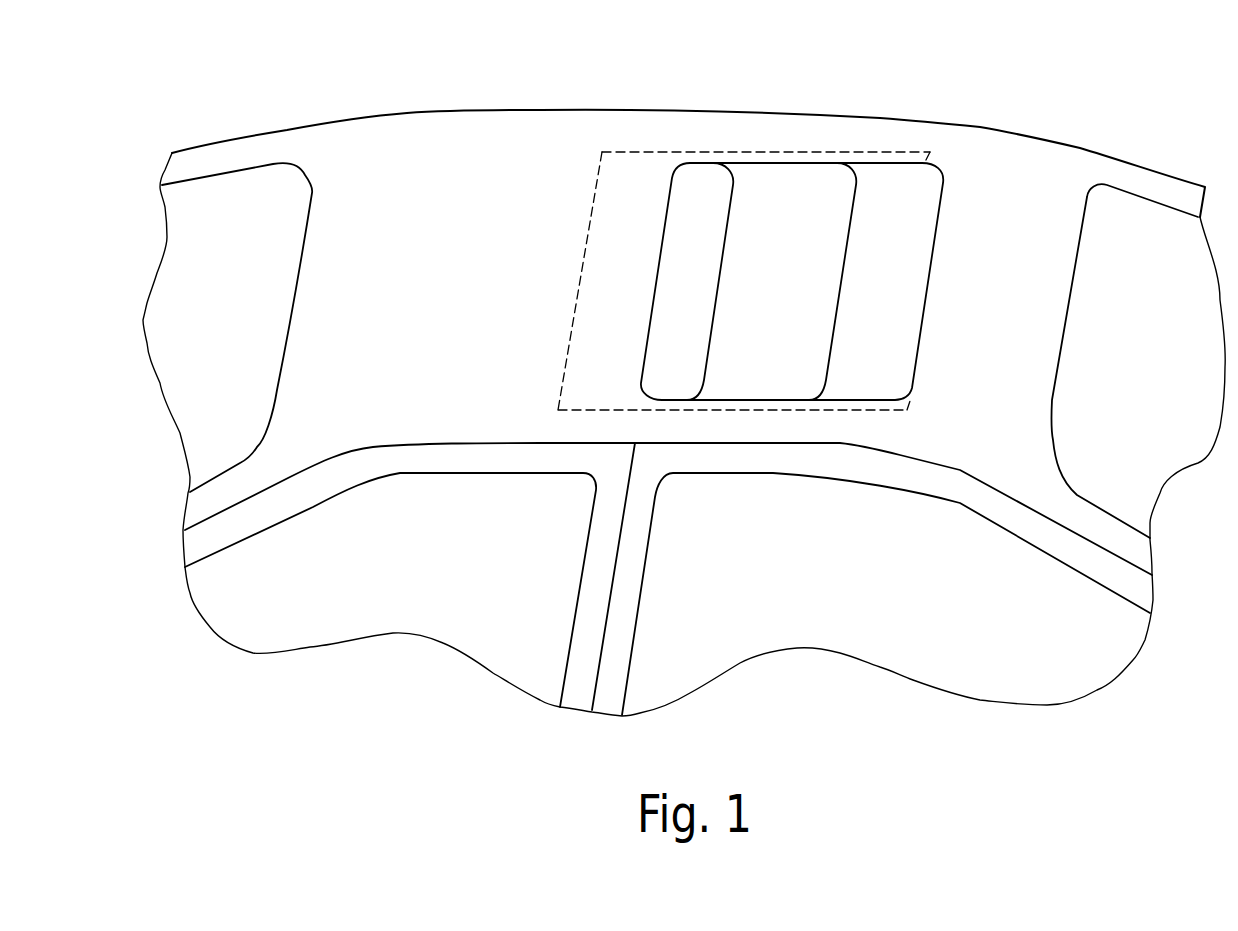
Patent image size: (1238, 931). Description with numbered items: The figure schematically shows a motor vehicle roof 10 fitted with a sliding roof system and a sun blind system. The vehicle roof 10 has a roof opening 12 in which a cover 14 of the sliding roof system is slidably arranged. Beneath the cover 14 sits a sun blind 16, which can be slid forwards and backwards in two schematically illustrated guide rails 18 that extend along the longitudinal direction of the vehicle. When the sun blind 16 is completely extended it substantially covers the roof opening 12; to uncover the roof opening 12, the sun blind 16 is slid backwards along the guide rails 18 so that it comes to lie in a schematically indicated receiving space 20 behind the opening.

The vehicle roof 10 is at (502, 127).
The roof opening 12 is at (905, 174).
The cover 14 is at (700, 180).
The sun blind 16 is at (780, 180).
The guide rails 18 is at (818, 150).
The receiving space 20 is at (715, 274).